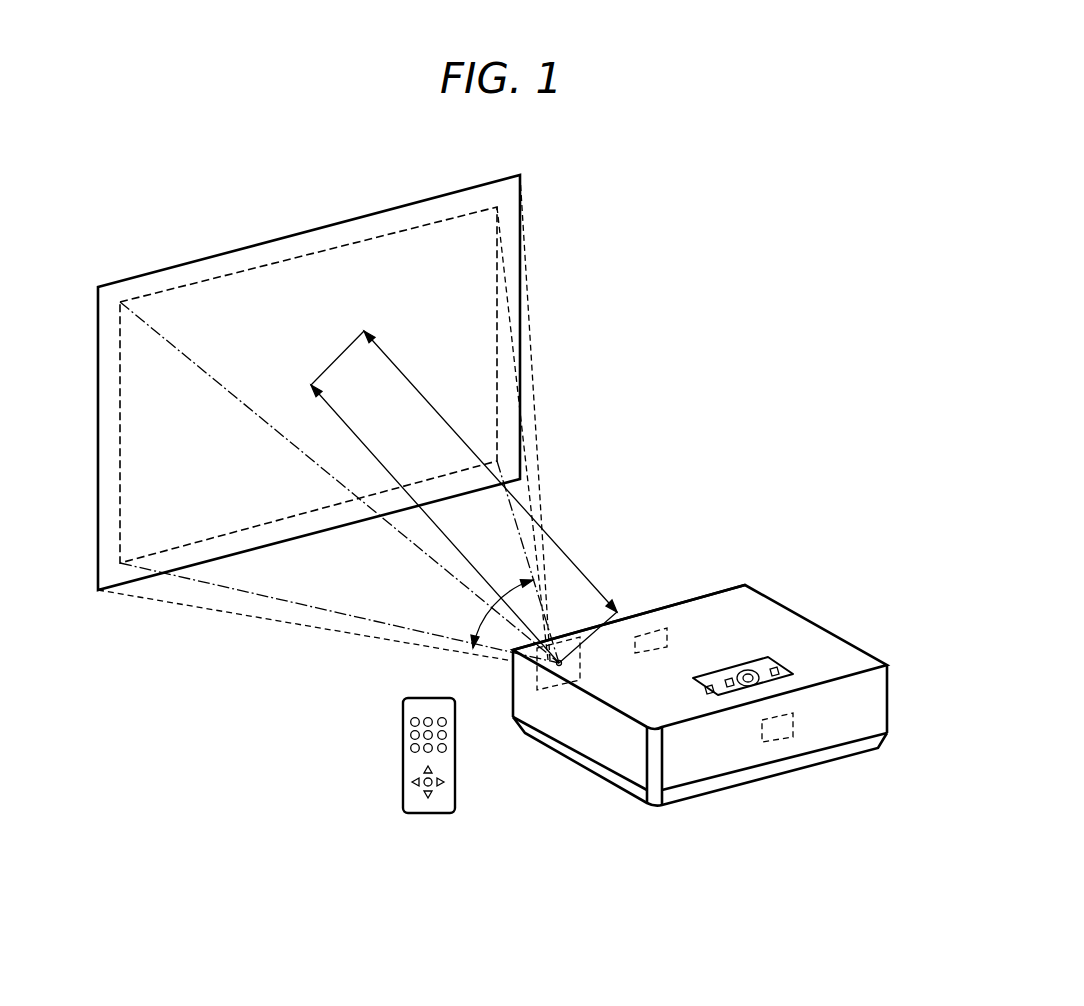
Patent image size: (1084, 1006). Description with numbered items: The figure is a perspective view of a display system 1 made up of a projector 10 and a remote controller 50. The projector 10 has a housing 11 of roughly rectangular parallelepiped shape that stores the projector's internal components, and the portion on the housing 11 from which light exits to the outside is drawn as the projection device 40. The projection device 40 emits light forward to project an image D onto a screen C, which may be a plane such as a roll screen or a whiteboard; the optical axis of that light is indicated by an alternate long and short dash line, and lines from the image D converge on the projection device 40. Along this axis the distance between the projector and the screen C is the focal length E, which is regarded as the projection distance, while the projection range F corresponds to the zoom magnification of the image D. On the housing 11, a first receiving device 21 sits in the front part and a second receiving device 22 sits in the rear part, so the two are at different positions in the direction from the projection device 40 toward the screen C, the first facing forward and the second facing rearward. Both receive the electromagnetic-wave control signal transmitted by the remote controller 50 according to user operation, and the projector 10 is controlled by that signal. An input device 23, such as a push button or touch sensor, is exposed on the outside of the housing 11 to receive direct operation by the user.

The display system 1 is at (842, 547).
The projector 10 is at (888, 693).
The housing 11 is at (762, 593).
The first receiving device 21 is at (670, 636).
The second receiving device 22 is at (797, 722).
The input device 23 is at (778, 661).
The projection device 40 is at (580, 658).
The remote controller 50 is at (432, 817).
The screen C is at (110, 377).
The image D is at (368, 238).
The focal length E is at (464, 497).
The projection range F is at (496, 614).